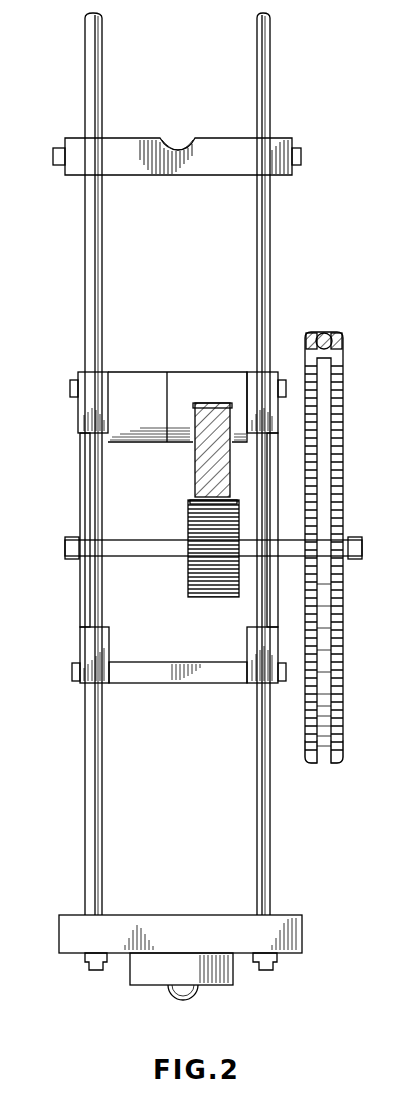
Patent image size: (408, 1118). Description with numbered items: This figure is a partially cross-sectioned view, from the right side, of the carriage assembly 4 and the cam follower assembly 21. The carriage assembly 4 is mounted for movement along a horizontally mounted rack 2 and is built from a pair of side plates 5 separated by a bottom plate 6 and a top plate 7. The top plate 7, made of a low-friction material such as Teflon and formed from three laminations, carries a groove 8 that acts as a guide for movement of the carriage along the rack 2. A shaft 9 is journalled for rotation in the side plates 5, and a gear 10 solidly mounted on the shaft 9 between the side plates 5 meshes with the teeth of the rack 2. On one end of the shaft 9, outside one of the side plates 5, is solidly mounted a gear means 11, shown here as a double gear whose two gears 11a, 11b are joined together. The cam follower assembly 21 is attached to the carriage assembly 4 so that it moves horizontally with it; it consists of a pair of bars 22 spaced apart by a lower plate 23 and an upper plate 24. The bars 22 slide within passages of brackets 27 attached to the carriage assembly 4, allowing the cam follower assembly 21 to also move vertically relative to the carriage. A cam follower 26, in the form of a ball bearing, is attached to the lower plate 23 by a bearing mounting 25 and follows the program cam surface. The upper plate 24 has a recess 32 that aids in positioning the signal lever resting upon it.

The rack 2 is at (200, 474).
The carriage assembly 4 is at (167, 493).
The side plates 5 is at (80, 585).
The bottom plate 6 is at (184, 680).
The top plate 7 is at (190, 380).
The groove 8 is at (195, 450).
The shaft 9 is at (154, 548).
The gear 10 is at (200, 598).
The gear means 11 is at (350, 402).
The gear 11a is at (311, 766).
The gear 11b is at (336, 766).
The cam follower assembly 21 is at (80, 852).
The bars 22 is at (90, 753).
The lower plate 23 is at (290, 936).
The upper plate 24 is at (283, 150).
The bearing mounting 25 is at (235, 975).
The cam follower 26 is at (183, 1000).
The brackets 27 is at (86, 380).
The recess 32 is at (182, 147).